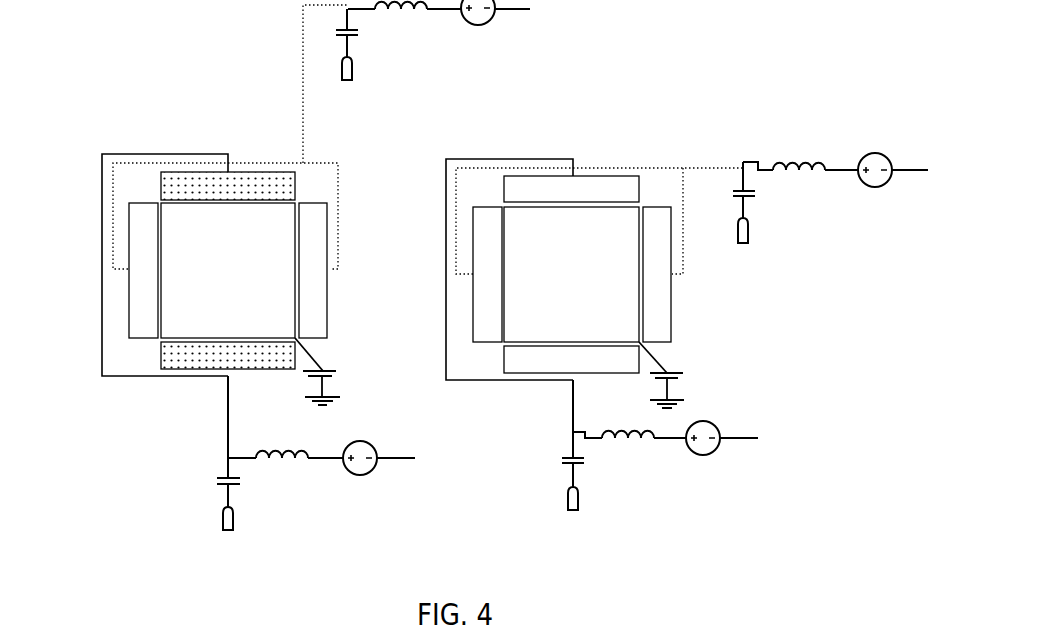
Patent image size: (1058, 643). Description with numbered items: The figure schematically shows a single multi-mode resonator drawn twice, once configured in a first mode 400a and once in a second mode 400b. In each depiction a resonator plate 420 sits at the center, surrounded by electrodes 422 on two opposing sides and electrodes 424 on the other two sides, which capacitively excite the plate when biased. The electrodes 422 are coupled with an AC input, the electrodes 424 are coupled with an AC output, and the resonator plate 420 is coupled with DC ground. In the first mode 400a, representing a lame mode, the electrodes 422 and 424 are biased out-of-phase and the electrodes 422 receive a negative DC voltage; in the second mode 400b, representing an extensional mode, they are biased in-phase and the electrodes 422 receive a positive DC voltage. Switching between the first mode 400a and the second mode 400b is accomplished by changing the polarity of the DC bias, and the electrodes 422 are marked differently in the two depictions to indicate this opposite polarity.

The first mode 400a is at (349, 148).
The second mode 400b is at (679, 152).
The resonator plate 420 is at (210, 281).
The electrodes 422 is at (210, 196).
The electrodes 424 is at (129, 305).